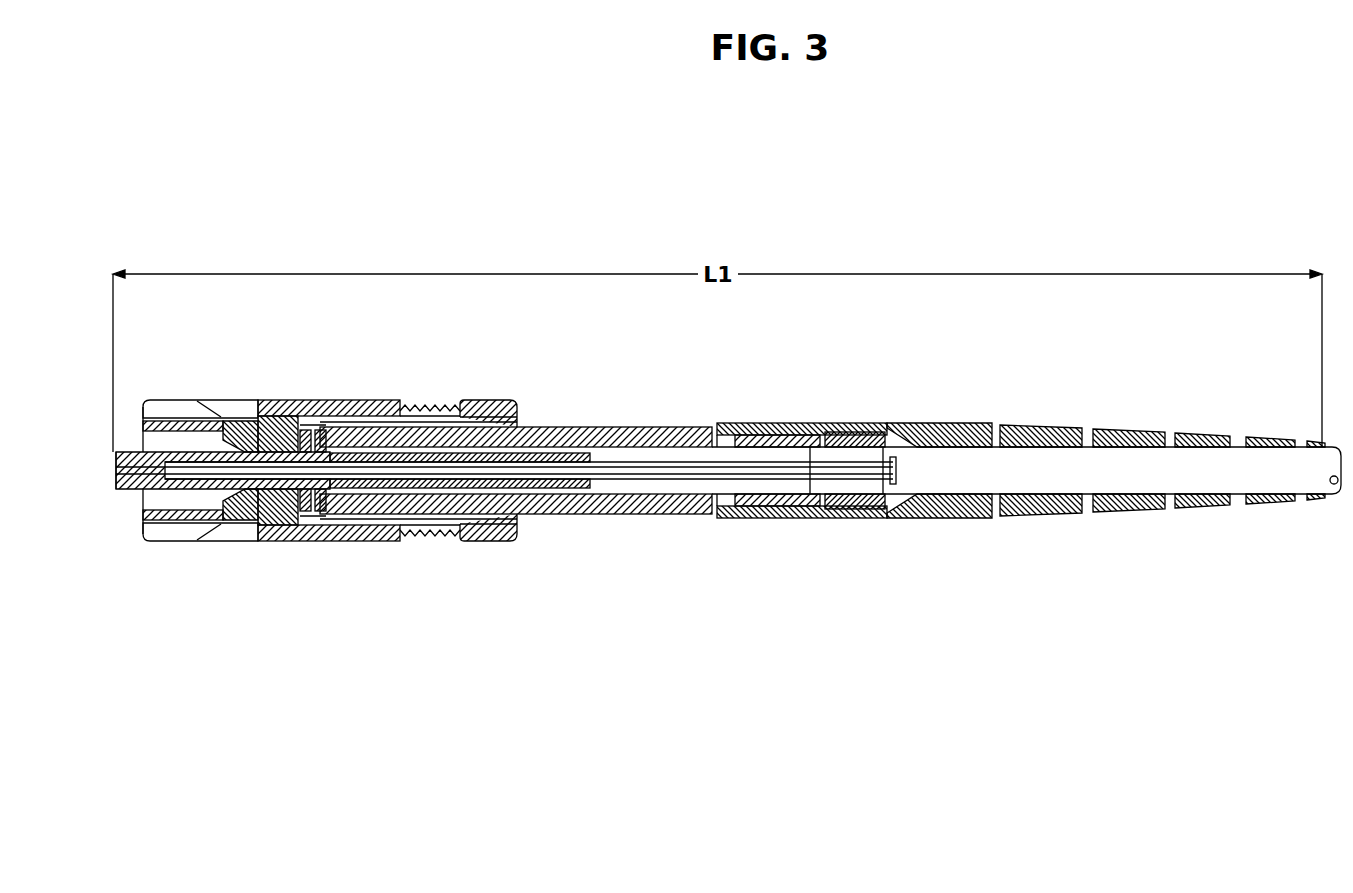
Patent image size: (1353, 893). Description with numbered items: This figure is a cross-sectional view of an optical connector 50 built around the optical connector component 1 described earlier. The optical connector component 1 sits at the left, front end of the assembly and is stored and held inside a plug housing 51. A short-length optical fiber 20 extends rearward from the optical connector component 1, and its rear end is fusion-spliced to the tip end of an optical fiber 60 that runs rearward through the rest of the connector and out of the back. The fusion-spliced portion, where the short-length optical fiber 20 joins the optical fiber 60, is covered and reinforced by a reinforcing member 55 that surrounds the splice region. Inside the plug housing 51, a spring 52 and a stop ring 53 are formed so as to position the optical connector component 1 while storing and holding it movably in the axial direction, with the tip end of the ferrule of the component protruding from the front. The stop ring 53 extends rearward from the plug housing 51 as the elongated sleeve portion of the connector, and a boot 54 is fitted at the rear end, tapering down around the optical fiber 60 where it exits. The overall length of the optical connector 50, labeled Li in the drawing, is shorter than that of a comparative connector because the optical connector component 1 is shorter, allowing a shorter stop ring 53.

The optical connector component 1 is at (184, 500).
The short-length optical fiber 20 is at (340, 522).
The optical connector 50 is at (910, 198).
The plug housing 51 is at (277, 401).
The spring 52 is at (304, 412).
The stop ring 53 is at (620, 427).
The boot 54 is at (976, 423).
The reinforcing member 55 is at (543, 453).
The optical fiber 60 is at (660, 481).